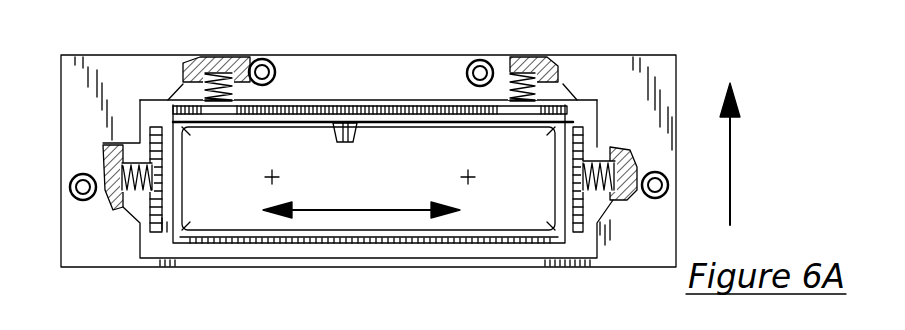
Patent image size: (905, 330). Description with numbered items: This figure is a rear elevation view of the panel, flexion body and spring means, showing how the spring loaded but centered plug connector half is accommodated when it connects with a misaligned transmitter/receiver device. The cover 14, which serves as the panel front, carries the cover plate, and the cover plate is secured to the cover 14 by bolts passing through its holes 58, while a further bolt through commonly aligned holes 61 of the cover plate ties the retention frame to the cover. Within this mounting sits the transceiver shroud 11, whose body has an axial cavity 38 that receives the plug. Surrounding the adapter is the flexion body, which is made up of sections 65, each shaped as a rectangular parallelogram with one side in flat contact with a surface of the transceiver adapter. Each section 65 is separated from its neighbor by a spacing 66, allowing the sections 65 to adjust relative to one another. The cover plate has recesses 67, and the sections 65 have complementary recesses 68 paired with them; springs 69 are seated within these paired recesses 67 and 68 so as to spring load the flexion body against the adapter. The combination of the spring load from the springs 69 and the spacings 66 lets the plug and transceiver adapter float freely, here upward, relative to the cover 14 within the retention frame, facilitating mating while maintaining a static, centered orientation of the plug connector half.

The cover 14 is at (70, 55).
The transceiver shroud 11 is at (248, 253).
The axial cavity 38 is at (480, 205).
The sections 65 is at (140, 133).
The spacing 66 is at (167, 118).
The recesses 67 is at (222, 60).
The complementary recesses 68 is at (218, 105).
The springs 69 is at (263, 60).
The holes 58 is at (280, 70).
The holes 61 is at (70, 203).